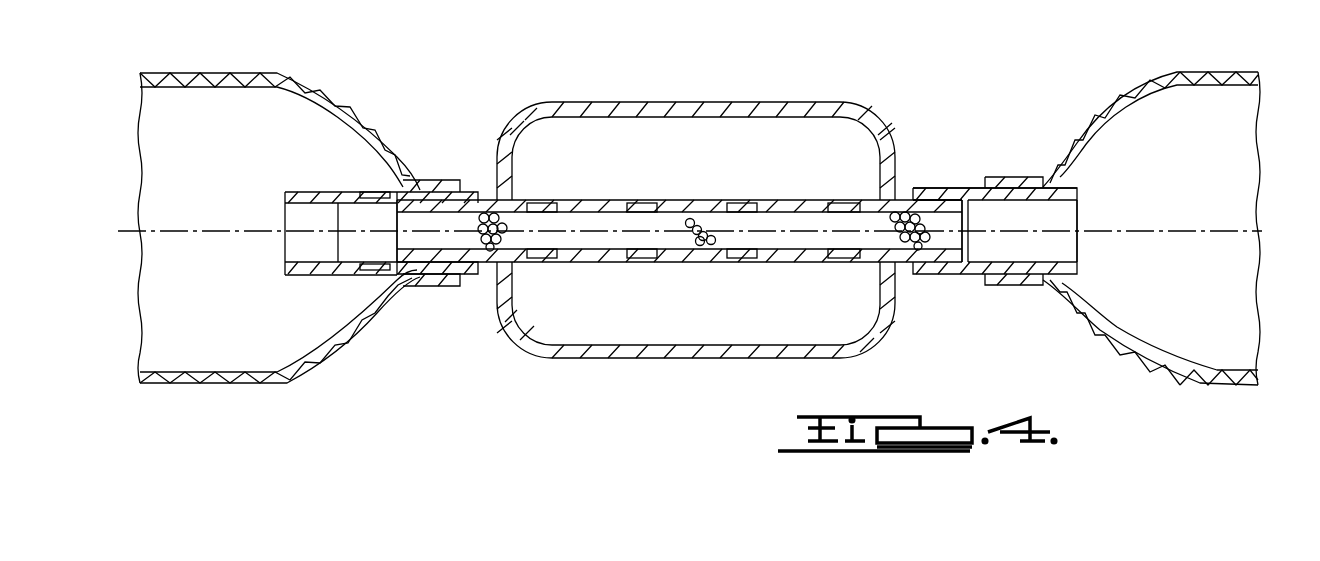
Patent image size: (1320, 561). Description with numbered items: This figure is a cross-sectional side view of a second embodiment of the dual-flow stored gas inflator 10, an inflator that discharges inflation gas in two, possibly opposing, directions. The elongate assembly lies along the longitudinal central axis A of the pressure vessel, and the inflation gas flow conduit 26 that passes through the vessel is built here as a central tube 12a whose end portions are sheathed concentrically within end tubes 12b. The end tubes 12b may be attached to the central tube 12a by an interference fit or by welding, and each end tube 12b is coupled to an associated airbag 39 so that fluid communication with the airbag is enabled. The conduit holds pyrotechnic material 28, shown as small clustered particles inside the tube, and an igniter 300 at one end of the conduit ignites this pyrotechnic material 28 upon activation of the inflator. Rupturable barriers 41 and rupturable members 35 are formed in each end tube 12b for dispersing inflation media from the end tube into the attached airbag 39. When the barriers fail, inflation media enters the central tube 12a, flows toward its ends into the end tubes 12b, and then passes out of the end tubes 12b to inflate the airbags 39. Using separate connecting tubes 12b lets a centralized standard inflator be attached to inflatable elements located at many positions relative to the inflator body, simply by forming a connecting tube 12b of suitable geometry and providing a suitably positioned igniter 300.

The dual-flow stored gas inflator 10 is at (537, 78).
The central tube 12a is at (937, 262).
The end tube 12b is at (468, 190).
The inflation gas flow conduit 26 is at (936, 180).
The pyrotechnic material 28 is at (697, 244).
The rupturable member 35 is at (973, 235).
The airbag 39 is at (318, 88).
The rupturable barrier 41 is at (372, 193).
The igniter 300 is at (293, 251).
The longitudinal central axis A is at (1235, 233).